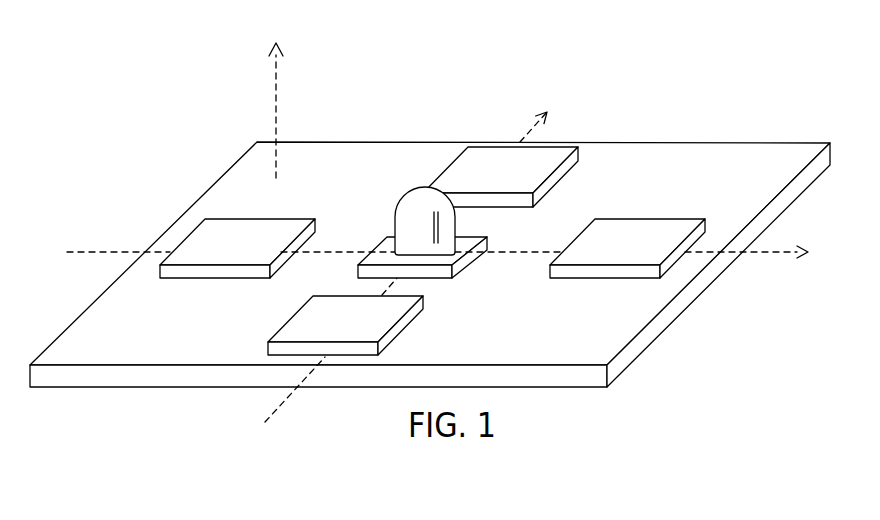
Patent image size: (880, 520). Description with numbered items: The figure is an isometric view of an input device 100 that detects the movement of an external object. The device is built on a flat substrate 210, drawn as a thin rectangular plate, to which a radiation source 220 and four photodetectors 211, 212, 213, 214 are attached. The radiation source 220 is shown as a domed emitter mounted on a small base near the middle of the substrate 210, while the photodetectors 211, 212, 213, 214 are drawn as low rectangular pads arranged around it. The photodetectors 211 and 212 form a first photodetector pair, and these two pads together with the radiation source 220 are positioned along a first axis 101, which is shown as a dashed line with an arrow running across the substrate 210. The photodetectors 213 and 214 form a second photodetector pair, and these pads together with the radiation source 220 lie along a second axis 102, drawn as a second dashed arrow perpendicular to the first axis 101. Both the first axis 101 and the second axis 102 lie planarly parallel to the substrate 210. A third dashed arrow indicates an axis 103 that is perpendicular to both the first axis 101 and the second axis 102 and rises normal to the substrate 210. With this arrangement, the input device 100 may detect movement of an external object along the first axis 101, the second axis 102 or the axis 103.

The input device 100 is at (97, 40).
The first axis 101 is at (747, 252).
The second axis 102 is at (535, 123).
The axis perpendicular to the first and second axes 103 is at (277, 93).
The substrate 210 is at (193, 355).
The photodetector 211 is at (246, 250).
The photodetector 212 is at (642, 250).
The photodetector 213 is at (357, 323).
The photodetector 214 is at (515, 176).
The radiation source 220 is at (437, 245).